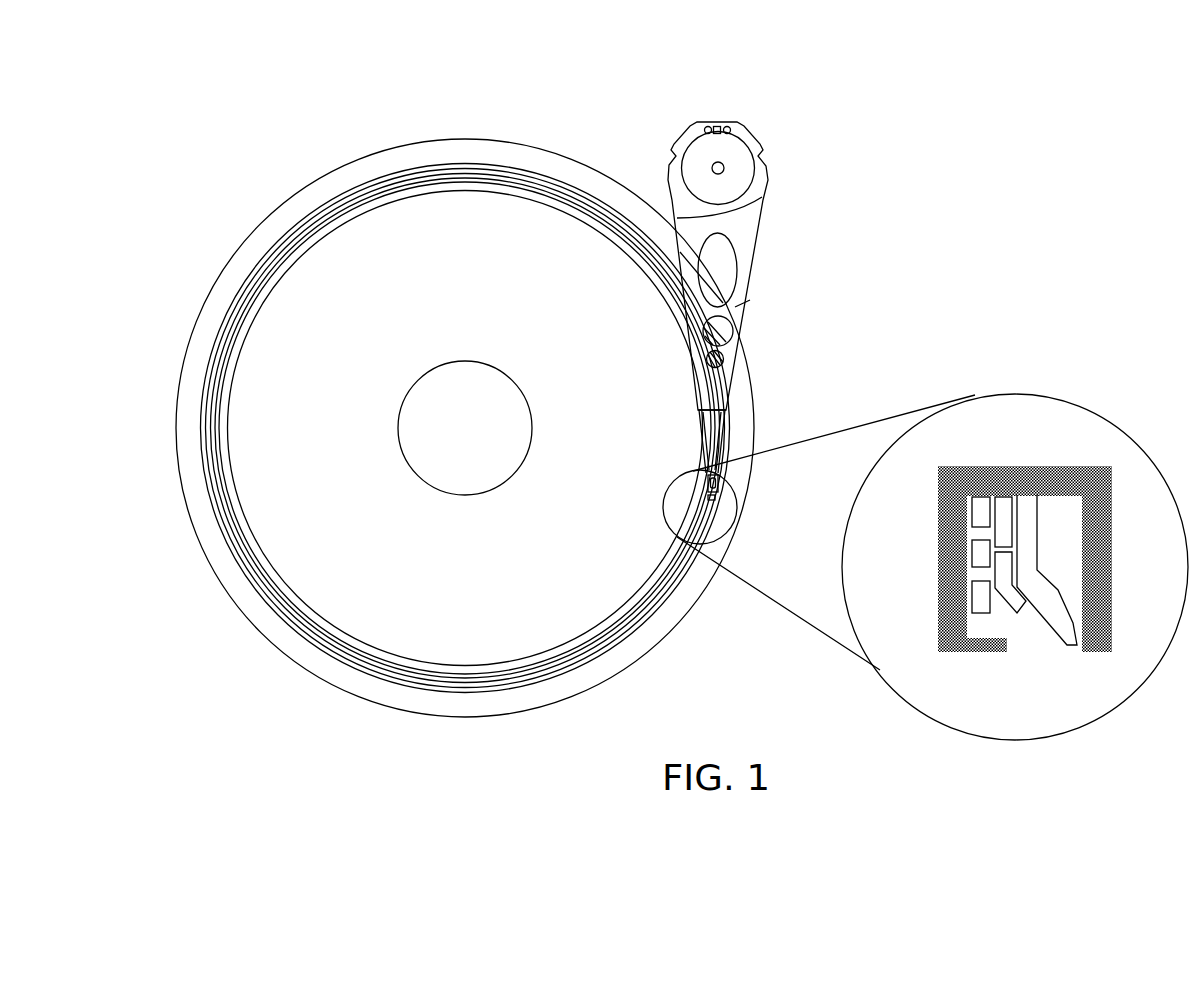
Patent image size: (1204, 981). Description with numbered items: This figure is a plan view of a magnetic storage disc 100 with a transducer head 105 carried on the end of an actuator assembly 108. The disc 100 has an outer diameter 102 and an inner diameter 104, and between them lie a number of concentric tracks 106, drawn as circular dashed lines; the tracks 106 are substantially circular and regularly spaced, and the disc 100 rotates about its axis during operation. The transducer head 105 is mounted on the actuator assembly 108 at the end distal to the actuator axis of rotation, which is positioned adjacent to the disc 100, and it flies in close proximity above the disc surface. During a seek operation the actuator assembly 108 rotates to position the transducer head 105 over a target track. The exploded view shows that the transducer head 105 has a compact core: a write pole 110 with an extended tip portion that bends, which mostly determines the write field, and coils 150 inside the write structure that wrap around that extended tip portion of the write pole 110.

The disc 100 is at (318, 733).
The outer diameter 102 is at (528, 144).
The inner diameter 104 is at (510, 357).
The concentric tracks 106 is at (357, 188).
The actuator assembly 108 is at (740, 300).
The transducer head 105 is at (720, 490).
The coils 150 is at (957, 492).
The write pole 110 is at (1060, 632).